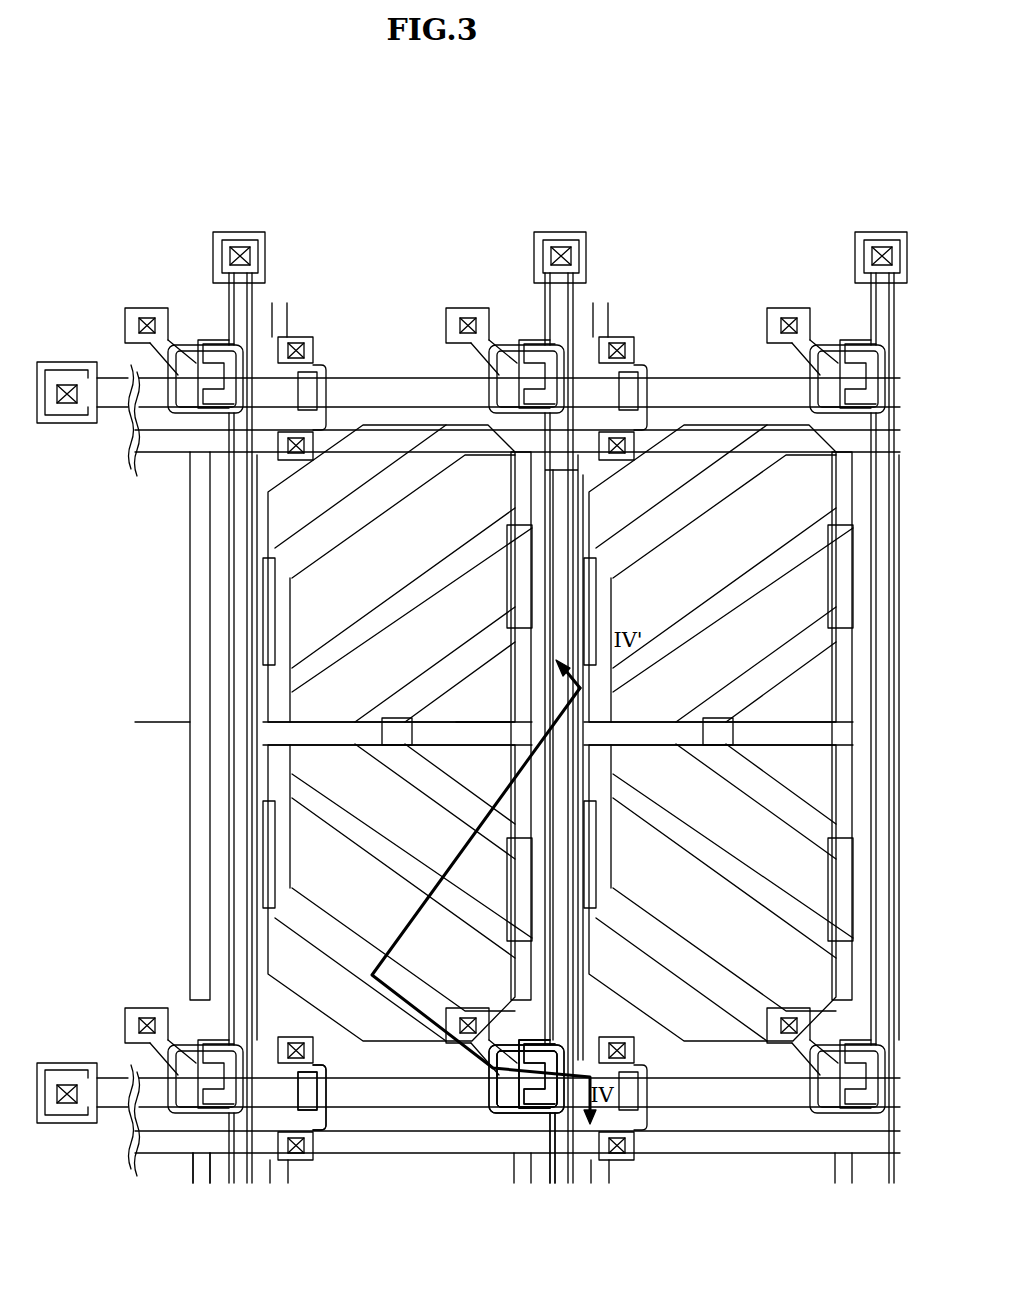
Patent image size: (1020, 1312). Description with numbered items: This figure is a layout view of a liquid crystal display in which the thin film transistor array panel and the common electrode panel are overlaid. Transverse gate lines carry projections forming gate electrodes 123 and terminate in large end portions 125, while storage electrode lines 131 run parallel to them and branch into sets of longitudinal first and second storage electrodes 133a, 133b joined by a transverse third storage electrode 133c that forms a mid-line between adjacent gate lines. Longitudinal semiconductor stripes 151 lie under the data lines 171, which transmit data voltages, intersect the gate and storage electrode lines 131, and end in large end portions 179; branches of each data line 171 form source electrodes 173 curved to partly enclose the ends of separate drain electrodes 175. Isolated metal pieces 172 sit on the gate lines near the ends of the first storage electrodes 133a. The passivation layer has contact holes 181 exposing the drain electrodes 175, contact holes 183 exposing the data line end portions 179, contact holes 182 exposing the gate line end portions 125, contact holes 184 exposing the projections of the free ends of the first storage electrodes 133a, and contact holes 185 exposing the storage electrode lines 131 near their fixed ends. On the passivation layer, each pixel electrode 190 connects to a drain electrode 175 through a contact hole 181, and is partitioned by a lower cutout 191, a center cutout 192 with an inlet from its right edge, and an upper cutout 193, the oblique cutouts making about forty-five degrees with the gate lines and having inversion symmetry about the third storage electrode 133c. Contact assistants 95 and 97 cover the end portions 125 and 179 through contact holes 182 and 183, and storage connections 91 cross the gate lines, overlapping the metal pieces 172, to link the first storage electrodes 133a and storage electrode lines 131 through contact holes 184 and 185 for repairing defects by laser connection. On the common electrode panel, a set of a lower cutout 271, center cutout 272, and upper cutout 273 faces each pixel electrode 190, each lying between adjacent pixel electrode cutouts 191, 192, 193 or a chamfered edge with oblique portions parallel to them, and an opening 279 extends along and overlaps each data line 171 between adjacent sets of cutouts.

The storage connection 91 is at (320, 1132).
The contact assistant 95 is at (45, 1125).
The contact assistant 97 is at (213, 246).
The gate electrode 123 is at (502, 1120).
The end portion of gate line 125 is at (75, 1122).
The storage electrode line 131 is at (333, 440).
The first storage electrode 133a is at (275, 632).
The second storage electrode 133b is at (517, 578).
The third storage electrode 133c is at (333, 722).
The semiconductor stripe 151 is at (588, 616).
The data line 171 is at (222, 795).
The metal piece 172 is at (270, 1162).
The source electrode 173 is at (525, 1105).
The drain electrode 175 is at (465, 1056).
The end portion of data line 179 is at (241, 232).
The contact hole 181 is at (468, 1010).
The contact hole 182 is at (65, 1085).
The contact hole 183 is at (255, 256).
The contact hole 184 is at (303, 1040).
The contact hole 185 is at (297, 1160).
The pixel electrode 190 is at (440, 1100).
The lower cutout 191 is at (342, 832).
The center cutout 192 is at (462, 753).
The upper cutout 193 is at (388, 592).
The lower cutout of common electrode 271 is at (362, 930).
The center cutout of common electrode 272 is at (370, 760).
The upper cutout of common electrode 273 is at (438, 485).
The opening 279 is at (596, 522).